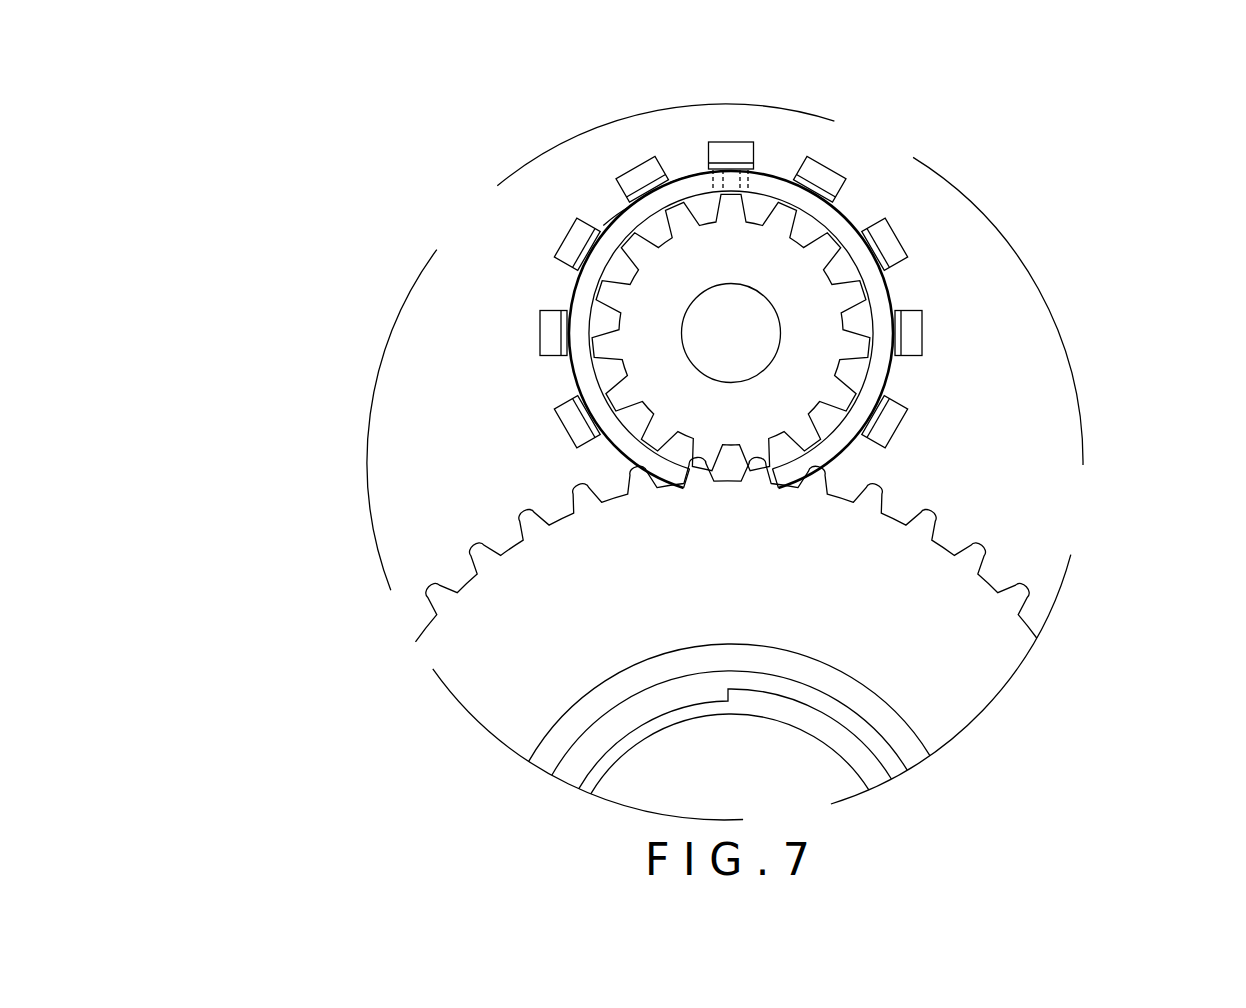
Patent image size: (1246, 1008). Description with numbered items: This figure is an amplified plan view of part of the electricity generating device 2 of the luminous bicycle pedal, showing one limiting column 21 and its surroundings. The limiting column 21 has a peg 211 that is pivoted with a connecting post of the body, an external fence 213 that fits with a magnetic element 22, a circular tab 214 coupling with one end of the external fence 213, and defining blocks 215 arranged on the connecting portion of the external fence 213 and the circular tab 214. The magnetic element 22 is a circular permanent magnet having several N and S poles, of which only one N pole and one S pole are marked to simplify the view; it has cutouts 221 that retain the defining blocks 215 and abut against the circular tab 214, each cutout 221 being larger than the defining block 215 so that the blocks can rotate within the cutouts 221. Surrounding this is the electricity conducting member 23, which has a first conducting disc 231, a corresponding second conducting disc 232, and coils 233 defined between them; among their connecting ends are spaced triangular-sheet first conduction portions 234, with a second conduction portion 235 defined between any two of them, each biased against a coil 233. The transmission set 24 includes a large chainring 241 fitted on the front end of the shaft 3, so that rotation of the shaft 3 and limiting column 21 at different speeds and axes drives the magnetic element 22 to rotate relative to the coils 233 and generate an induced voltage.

The electricity generating device 2 is at (1027, 493).
The shaft 3 is at (785, 790).
The limiting column 21 is at (850, 293).
The peg 211 is at (742, 330).
The external fence 213 is at (592, 348).
The circular tab 214 is at (602, 222).
The defining block 215 is at (713, 160).
The magnetic element 22 is at (877, 297).
The cutout 221 is at (742, 160).
The electricity conducting member 23 is at (400, 463).
The first conducting disc 231 is at (402, 420).
The second conducting disc 232 is at (495, 287).
The coil 233 is at (573, 243).
The first conduction portion 234 is at (688, 170).
The second conduction portion 235 is at (648, 222).
The transmission set 24 is at (935, 680).
The large chainring 241 is at (735, 741).